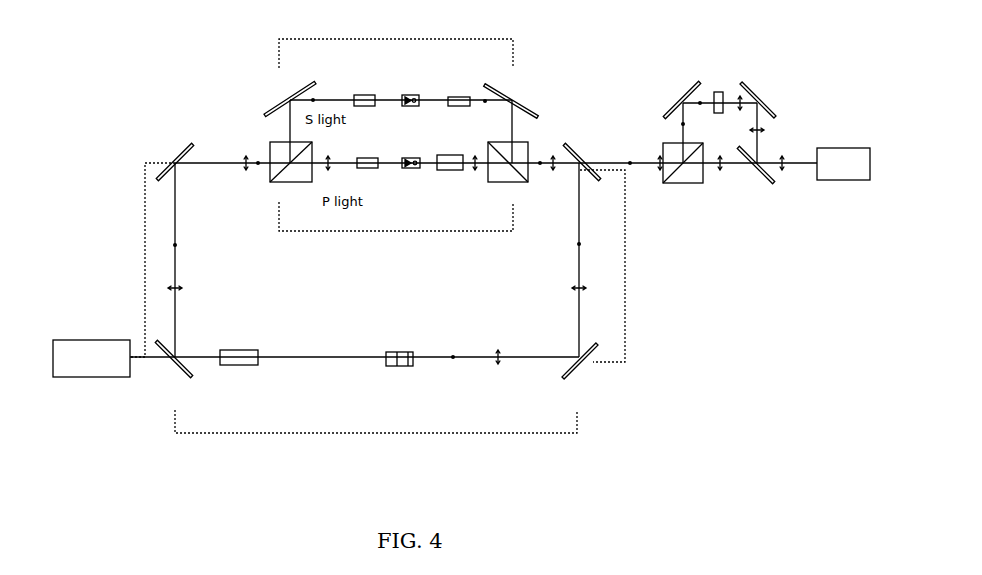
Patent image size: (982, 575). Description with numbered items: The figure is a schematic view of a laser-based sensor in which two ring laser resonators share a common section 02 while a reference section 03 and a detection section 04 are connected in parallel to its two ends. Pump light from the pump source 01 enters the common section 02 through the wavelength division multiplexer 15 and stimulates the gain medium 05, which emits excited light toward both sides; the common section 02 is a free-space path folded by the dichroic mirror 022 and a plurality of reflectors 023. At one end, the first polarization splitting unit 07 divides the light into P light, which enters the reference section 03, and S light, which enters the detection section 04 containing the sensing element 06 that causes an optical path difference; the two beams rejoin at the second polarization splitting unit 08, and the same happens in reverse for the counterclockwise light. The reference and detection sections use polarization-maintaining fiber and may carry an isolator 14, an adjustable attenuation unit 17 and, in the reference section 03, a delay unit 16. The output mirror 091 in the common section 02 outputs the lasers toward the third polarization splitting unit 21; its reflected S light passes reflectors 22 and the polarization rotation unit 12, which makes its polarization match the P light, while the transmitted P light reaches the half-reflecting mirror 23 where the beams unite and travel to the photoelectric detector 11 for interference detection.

The pump source 01 is at (87, 340).
The common section 02 is at (389, 310).
The dichroic mirror 022 is at (213, 408).
The reflector 023 is at (582, 363).
The reference section 03 is at (396, 227).
The detection section 04 is at (396, 44).
The gain medium 05 is at (232, 365).
The sensing element 06 is at (465, 95).
The first polarization splitting unit 07 is at (270, 143).
The second polarization splitting unit 08 is at (528, 142).
The output mirror 091 is at (578, 153).
The photoelectric detector 11 is at (827, 180).
The polarization rotation unit 12 is at (718, 92).
The isolator 14 is at (422, 157).
The wavelength division multiplexer 15 is at (395, 366).
The delay unit 16 is at (450, 170).
The adjustable attenuation unit 17 is at (383, 208).
The third polarization splitting unit 21 is at (675, 183).
The reflector 22 is at (763, 98).
The half-reflecting mirror 23 is at (770, 183).